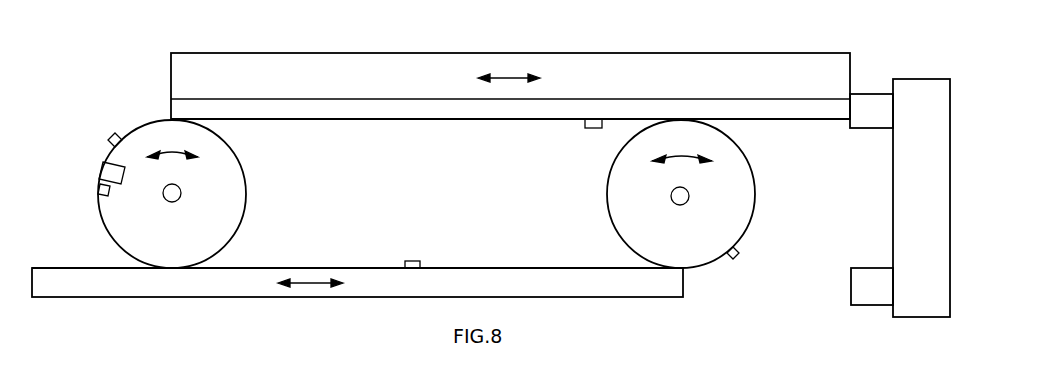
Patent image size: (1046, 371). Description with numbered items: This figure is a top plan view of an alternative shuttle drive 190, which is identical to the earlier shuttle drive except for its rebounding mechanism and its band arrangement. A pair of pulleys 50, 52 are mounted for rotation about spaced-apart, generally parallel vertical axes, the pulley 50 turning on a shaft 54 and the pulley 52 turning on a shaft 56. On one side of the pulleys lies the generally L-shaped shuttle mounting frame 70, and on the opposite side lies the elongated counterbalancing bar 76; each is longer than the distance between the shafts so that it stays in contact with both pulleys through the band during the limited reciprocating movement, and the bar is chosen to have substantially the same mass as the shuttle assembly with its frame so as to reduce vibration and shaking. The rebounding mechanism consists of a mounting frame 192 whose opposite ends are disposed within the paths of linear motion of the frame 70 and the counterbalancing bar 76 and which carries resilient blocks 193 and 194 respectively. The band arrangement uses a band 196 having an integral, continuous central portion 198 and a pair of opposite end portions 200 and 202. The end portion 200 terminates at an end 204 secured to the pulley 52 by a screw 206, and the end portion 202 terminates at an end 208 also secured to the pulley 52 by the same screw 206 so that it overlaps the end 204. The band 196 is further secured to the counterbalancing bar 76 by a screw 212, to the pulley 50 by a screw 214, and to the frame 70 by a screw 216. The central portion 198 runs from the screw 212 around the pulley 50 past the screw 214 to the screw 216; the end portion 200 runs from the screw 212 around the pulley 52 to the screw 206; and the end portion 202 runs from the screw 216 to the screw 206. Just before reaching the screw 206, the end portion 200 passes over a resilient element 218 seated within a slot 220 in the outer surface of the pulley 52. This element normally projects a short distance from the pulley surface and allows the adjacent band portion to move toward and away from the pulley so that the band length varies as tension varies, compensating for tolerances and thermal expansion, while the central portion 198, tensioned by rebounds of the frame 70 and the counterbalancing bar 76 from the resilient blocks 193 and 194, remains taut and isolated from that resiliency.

The pulley 50 is at (740, 221).
The pulley 52 is at (112, 217).
The shaft 54 is at (686, 203).
The shaft 56 is at (179, 198).
The shuttle mounting frame 70 is at (774, 67).
The counterbalancing bar 76 is at (183, 285).
The shuttle drive 190 is at (712, 290).
The mounting frame 192 is at (906, 312).
The resilient block 193 is at (866, 100).
The resilient block 194 is at (870, 297).
The band 196 is at (490, 261).
The central portion 198 is at (563, 267).
The end portion 200 is at (257, 267).
The end portion 202 is at (407, 121).
The end 204 is at (108, 150).
The screw 206 is at (116, 132).
The end 208 is at (158, 120).
The screw 212 is at (406, 261).
The screw 214 is at (740, 253).
The screw 216 is at (586, 128).
The resilient element 218 is at (103, 174).
The slot 220 is at (100, 191).